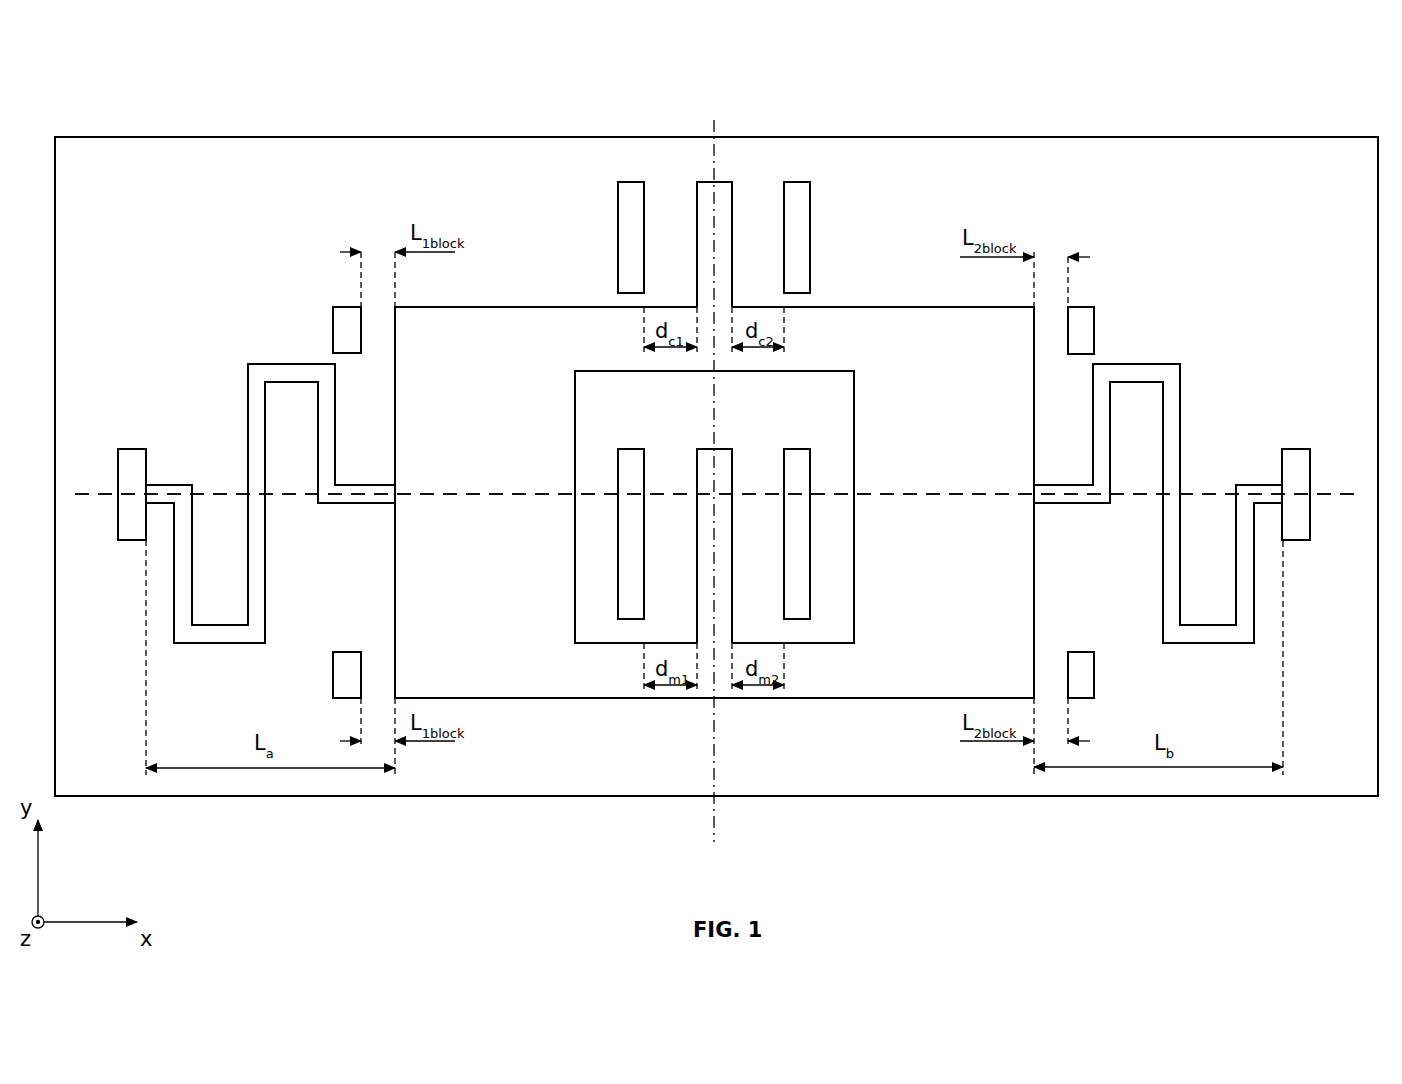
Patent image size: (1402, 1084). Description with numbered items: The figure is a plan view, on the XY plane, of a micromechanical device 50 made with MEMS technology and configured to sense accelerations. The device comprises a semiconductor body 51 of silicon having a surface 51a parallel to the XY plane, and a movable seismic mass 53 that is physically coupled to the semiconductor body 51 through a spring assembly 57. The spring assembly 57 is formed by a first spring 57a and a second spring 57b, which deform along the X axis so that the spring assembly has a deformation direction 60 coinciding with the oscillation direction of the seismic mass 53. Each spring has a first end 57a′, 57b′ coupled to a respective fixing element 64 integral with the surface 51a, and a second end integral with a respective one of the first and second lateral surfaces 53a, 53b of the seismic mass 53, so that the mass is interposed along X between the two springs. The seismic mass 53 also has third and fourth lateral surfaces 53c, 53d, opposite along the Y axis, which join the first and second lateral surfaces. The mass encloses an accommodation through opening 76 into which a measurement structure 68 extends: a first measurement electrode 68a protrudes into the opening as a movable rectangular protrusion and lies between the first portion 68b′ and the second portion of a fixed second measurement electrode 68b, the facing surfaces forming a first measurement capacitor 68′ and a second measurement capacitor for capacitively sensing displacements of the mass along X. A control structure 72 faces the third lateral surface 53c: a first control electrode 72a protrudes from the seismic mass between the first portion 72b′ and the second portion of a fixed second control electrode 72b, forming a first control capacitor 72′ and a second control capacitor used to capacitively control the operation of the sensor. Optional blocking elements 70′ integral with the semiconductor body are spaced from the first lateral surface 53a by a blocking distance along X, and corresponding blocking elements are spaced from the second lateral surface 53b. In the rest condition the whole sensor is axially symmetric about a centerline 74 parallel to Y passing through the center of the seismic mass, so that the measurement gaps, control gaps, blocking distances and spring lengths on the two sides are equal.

The micromechanical device 50 is at (93, 117).
The semiconductor body 51 is at (222, 168).
The surface 51a is at (447, 168).
The seismic mass 53 is at (533, 700).
The first lateral surface 53a is at (393, 585).
The second lateral surface 53b is at (1036, 552).
The third lateral surface 53c is at (915, 305).
The fourth lateral surface 53d is at (857, 702).
The spring assembly 57 is at (232, 308).
The first spring 57a is at (210, 634).
The first end of first spring 57a′ is at (178, 483).
The second spring 57b is at (1218, 634).
The first end of second spring 57b′ is at (1258, 483).
The deformation direction 60 is at (1350, 505).
The fixing element 64 is at (130, 456).
The measurement structure 68 is at (728, 390).
The first measurement electrode 68a is at (705, 458).
The first measurement capacitor 68′ is at (672, 448).
The second measurement electrode 68b is at (616, 477).
The first portion of second measurement electrode 68b′ is at (627, 458).
The first blocking element 70′ is at (345, 322).
The control structure 72 is at (705, 172).
The first control electrode 72a is at (722, 190).
The first control capacitor 72′ is at (668, 188).
The second control electrode 72b is at (616, 236).
The first portion of second control electrode 72b′ is at (633, 192).
The centerline 74 is at (716, 836).
The accommodation through opening 76 is at (815, 630).